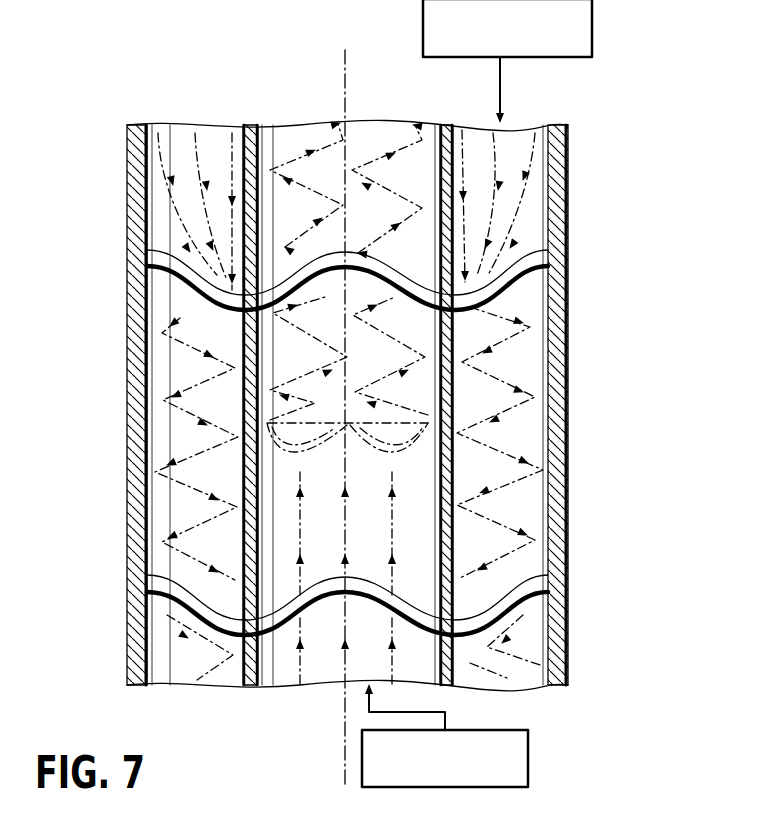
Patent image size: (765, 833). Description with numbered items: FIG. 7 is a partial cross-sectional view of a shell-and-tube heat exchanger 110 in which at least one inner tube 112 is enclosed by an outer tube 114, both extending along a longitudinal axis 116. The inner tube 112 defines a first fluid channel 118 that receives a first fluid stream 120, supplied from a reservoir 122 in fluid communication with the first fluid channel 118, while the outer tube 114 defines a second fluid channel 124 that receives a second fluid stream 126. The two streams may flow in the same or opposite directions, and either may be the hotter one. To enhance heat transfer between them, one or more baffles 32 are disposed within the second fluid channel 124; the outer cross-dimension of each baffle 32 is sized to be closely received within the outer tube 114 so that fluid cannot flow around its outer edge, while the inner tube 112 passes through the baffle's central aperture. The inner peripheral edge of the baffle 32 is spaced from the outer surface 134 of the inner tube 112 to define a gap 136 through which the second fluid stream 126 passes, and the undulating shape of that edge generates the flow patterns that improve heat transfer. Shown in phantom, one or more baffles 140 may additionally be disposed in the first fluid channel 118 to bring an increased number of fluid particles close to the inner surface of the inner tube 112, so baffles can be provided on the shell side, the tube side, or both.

The shell-and-tube heat exchanger 110 is at (653, 113).
The inner tube 112 is at (462, 134).
The outer tube 114 is at (131, 166).
The longitudinal axis 116 is at (345, 77).
The first fluid channel 118 is at (450, 405).
The first fluid stream 120 is at (300, 658).
The reservoir 122 is at (530, 757).
The second fluid channel 124 is at (150, 363).
The second fluid stream 126 is at (216, 140).
The baffle 32 is at (168, 288).
The outer surface 134 is at (455, 480).
The gap 136 is at (185, 320).
The baffle 140 is at (305, 456).